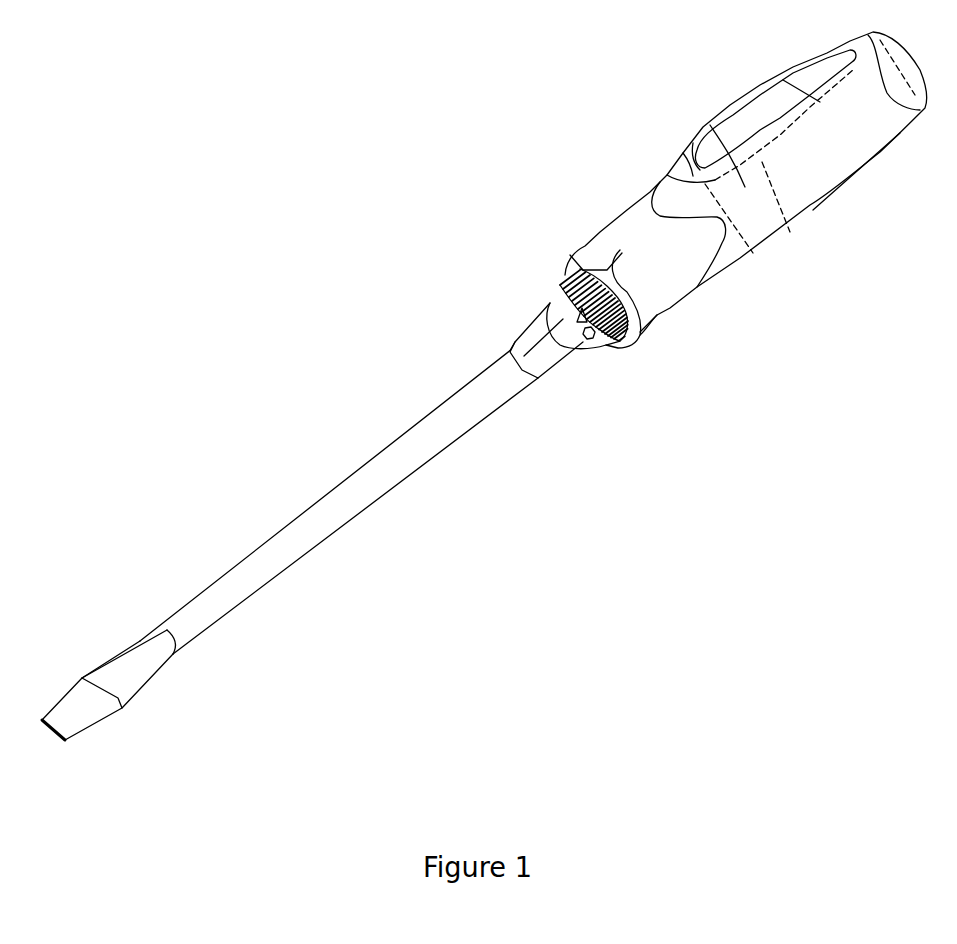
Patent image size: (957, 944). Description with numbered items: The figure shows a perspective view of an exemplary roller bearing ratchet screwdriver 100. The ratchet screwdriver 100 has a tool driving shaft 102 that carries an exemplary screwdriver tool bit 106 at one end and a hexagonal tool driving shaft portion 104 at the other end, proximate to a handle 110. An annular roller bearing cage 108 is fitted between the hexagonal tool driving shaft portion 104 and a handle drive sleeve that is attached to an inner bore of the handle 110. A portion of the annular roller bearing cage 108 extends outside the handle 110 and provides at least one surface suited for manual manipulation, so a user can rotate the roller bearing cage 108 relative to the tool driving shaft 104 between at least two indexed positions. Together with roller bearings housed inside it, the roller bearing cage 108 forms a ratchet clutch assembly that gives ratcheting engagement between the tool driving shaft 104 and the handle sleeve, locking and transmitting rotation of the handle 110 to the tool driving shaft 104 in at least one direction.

The roller bearing ratchet screwdriver 100 is at (313, 333).
The tool driving shaft 102 is at (372, 522).
The hexagonal tool driving shaft portion 104 is at (562, 380).
The screwdriver tool bit 106 is at (132, 726).
The annular roller bearing cage 108 is at (550, 293).
The handle 110 is at (747, 273).